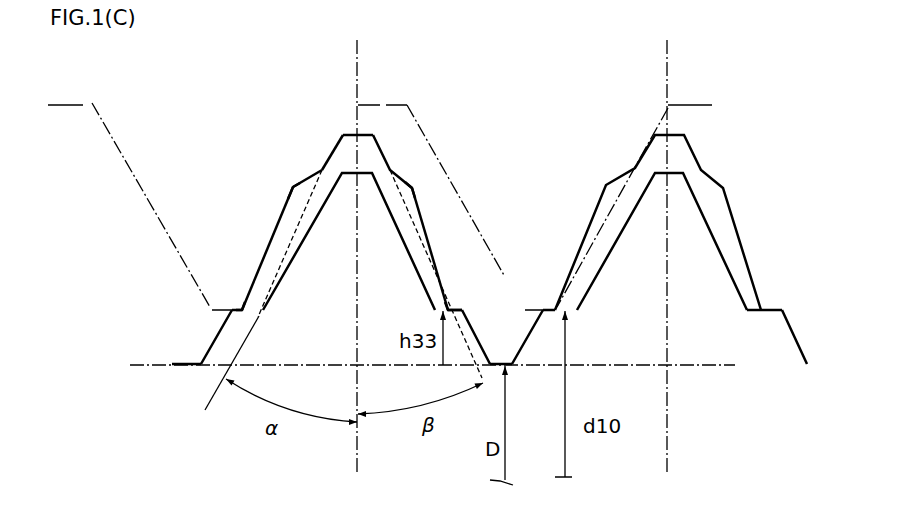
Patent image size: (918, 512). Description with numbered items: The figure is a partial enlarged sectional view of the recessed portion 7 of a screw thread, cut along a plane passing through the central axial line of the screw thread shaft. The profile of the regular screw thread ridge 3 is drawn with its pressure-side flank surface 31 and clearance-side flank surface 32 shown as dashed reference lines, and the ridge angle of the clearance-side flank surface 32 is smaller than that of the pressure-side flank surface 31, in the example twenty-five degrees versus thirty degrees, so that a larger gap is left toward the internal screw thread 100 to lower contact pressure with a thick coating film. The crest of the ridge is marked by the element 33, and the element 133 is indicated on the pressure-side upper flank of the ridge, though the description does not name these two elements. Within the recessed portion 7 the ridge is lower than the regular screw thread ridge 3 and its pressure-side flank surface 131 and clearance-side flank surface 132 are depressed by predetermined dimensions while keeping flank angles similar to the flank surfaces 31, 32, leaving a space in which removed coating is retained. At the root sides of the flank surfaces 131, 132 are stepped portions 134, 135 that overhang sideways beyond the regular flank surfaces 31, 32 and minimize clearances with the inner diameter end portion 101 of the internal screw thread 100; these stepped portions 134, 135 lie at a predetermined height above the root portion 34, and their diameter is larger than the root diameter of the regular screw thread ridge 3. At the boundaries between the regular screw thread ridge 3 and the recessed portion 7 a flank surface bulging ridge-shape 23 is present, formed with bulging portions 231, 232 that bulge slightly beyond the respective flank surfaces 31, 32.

The regular screw thread ridge 3 is at (345, 168).
The recessed portion 7 is at (375, 163).
The flank surface bulging ridge-shape 23 is at (300, 181).
The pressure-side flank surface 31 is at (285, 255).
The clearance-side flank surface 32 is at (418, 232).
The tooth tip 33 is at (348, 133).
The root portion 34 is at (192, 364).
The internal screw thread 100 is at (123, 158).
The inner diameter end portion 101 is at (213, 309).
The pressure-side flank surface 131 is at (319, 213).
The clearance-side flank surface 132 is at (400, 178).
The left upper flank 133 is at (308, 177).
The stepped portion 134 is at (245, 305).
The stepped portion 135 is at (452, 309).
The bulging portion 231 is at (293, 186).
The bulging portion 232 is at (413, 189).